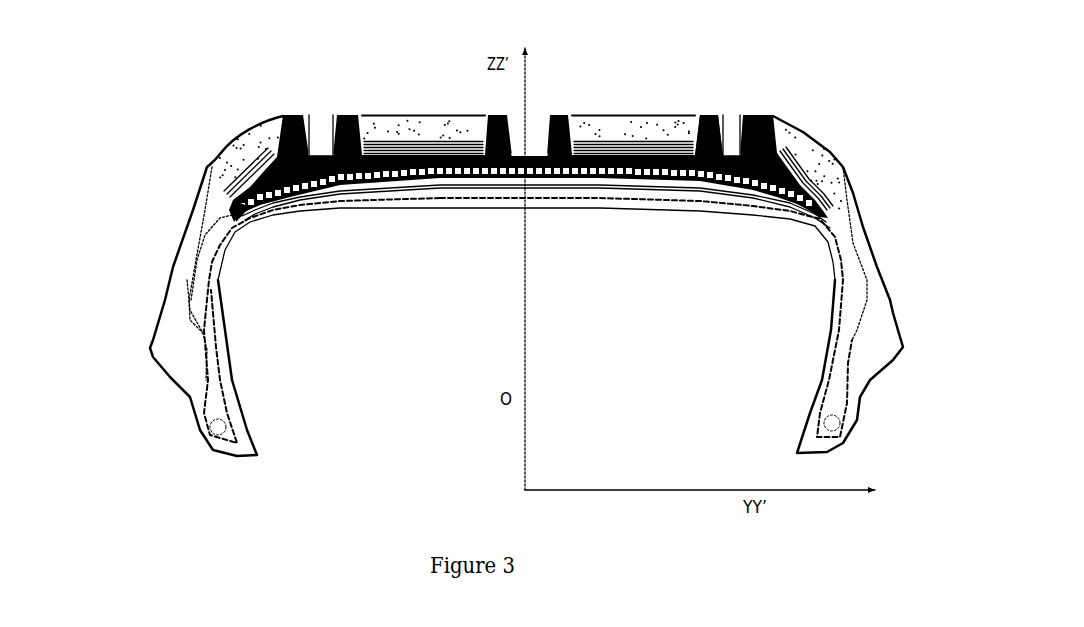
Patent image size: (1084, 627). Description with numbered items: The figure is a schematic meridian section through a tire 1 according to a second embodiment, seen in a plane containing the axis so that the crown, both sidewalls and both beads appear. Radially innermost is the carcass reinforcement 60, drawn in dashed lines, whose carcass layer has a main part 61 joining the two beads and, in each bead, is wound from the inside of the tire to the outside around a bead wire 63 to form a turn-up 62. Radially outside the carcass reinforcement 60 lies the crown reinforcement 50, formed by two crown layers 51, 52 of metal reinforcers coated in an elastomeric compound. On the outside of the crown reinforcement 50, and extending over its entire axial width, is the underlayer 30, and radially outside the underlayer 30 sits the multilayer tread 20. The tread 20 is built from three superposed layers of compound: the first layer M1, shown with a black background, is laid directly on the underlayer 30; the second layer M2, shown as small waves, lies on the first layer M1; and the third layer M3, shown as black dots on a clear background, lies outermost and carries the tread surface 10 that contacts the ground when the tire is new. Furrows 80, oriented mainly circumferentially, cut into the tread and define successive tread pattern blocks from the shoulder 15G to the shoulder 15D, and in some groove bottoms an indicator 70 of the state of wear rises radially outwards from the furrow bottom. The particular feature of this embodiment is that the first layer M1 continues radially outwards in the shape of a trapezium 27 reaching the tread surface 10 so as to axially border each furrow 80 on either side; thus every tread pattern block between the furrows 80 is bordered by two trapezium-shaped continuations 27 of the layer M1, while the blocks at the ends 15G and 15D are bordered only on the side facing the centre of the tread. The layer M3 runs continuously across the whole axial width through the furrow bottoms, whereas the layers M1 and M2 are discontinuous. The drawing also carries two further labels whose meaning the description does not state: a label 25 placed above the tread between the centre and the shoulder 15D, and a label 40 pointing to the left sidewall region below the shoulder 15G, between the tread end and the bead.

The tire 1 is at (423, 113).
The tread surface 10 is at (467, 112).
The shoulder 15G is at (207, 168).
The shoulder 15D is at (845, 165).
The multilayer tread 20 is at (357, 250).
The tread surface 25 is at (633, 115).
The trapezium 27 is at (709, 115).
The underlayer 30 is at (590, 178).
The sidewall rubber 40 is at (193, 212).
The crown reinforcement 50 is at (106, 255).
The crown layer 51 is at (248, 210).
The crown layer 52 is at (222, 233).
The carcass reinforcement 60 is at (86, 388).
The main part 61 is at (203, 333).
The turn-up 62 is at (212, 380).
The bead wire 63 is at (218, 427).
The indicator of the state of wear 70 is at (320, 150).
The furrow 80 is at (730, 132).
The first layer of elastomeric compound M1 is at (470, 180).
The second layer M2 is at (437, 144).
The third layer M3 is at (383, 126).